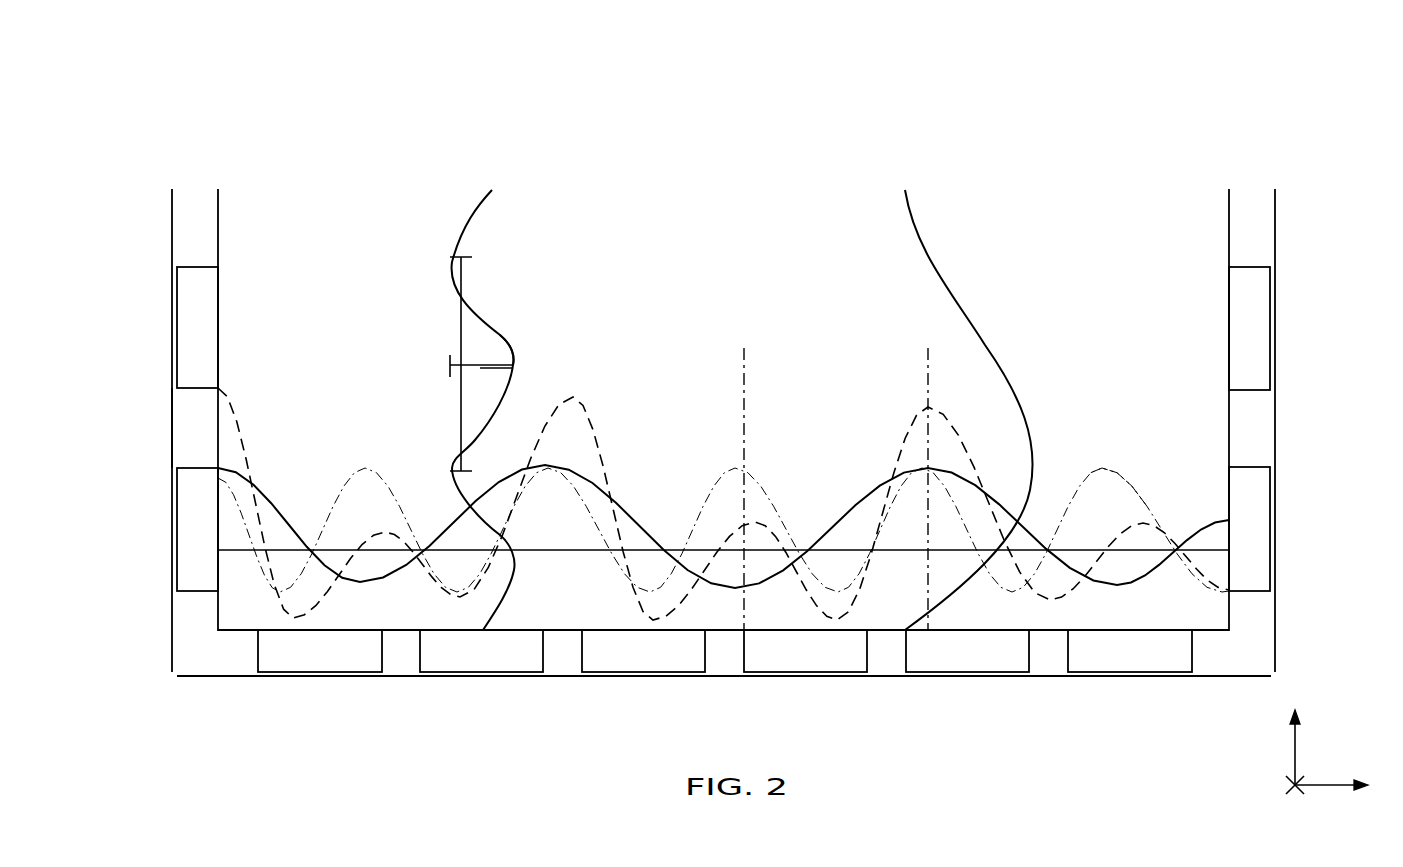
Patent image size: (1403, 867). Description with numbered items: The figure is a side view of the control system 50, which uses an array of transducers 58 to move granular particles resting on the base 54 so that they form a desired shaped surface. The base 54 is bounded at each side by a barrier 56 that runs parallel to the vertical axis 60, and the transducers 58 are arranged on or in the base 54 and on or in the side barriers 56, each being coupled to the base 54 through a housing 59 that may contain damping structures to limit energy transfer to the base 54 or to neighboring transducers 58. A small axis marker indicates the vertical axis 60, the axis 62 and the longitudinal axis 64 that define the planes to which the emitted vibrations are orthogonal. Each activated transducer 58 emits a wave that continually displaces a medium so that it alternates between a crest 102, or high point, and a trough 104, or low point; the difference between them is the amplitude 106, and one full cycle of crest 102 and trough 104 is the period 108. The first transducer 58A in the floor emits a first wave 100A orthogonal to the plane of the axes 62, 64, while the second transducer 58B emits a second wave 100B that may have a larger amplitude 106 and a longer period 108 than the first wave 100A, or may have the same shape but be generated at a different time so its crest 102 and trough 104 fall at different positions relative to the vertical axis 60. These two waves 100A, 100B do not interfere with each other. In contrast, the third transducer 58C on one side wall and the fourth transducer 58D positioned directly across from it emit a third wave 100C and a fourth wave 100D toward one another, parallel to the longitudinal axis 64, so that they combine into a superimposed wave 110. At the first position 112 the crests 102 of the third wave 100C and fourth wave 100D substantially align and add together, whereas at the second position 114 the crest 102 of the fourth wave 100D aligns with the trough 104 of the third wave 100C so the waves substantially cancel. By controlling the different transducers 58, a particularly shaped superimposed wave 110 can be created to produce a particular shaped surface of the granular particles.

The control system 50 is at (1204, 122).
The base 54 is at (217, 612).
The barrier 56 is at (219, 231).
The transducer 58 is at (188, 315).
The first transducer 58A is at (480, 677).
The second transducer 58B is at (966, 677).
The third transducer 58C is at (188, 515).
The fourth transducer 58D is at (1272, 530).
The housing 59 is at (172, 428).
The vertical axis 60 is at (1292, 752).
The axis 62 is at (1290, 785).
The longitudinal axis 64 is at (1325, 783).
The first wave 100A is at (484, 205).
The second wave 100B is at (912, 210).
The third wave 100C is at (249, 492).
The fourth wave 100D is at (1103, 468).
The crest 102 is at (458, 237).
The trough 104 is at (512, 360).
The amplitude 106 is at (483, 368).
The period 108 is at (460, 305).
The superimposed wave 110 is at (578, 400).
The first position 112 is at (928, 378).
The second position 114 is at (744, 378).